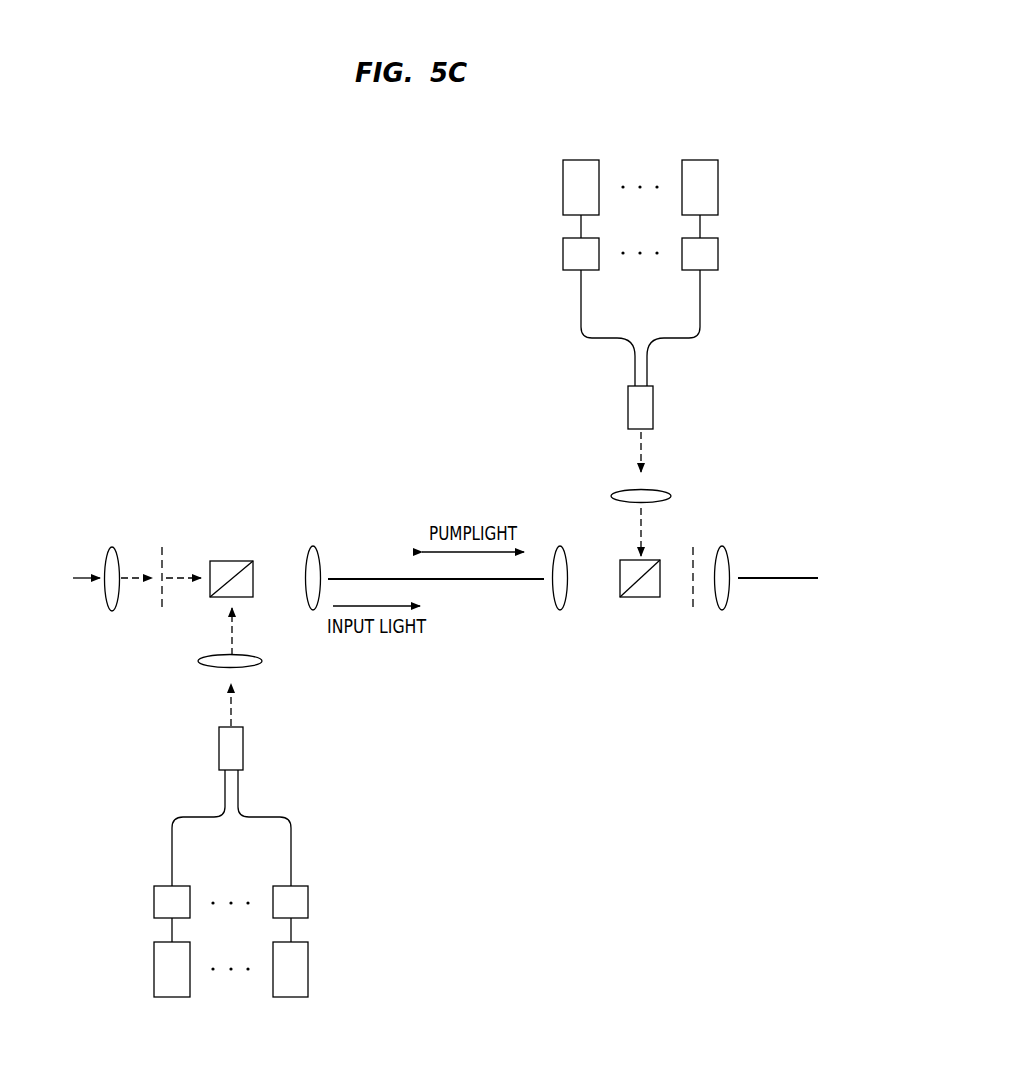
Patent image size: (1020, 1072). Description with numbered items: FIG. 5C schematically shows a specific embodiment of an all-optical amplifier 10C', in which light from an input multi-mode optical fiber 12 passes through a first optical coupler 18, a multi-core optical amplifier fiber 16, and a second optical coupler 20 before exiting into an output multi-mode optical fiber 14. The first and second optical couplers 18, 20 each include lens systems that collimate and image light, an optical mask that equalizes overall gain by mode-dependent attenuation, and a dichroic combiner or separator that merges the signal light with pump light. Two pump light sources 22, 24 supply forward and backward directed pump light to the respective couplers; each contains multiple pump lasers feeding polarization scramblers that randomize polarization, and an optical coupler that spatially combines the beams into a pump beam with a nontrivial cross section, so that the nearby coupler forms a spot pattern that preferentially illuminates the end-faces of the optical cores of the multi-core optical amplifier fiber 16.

The all-optical amplifier 10C' is at (447, 410).
The input multi-mode optical fiber 12 is at (73, 578).
The output multi-mode optical fiber 14 is at (793, 580).
The multi-core optical amplifier fiber 16 is at (503, 581).
The first optical coupler 18 is at (325, 515).
The second optical coupler 20 is at (742, 648).
The pump light source 22 is at (122, 732).
The pump light source 24 is at (532, 162).